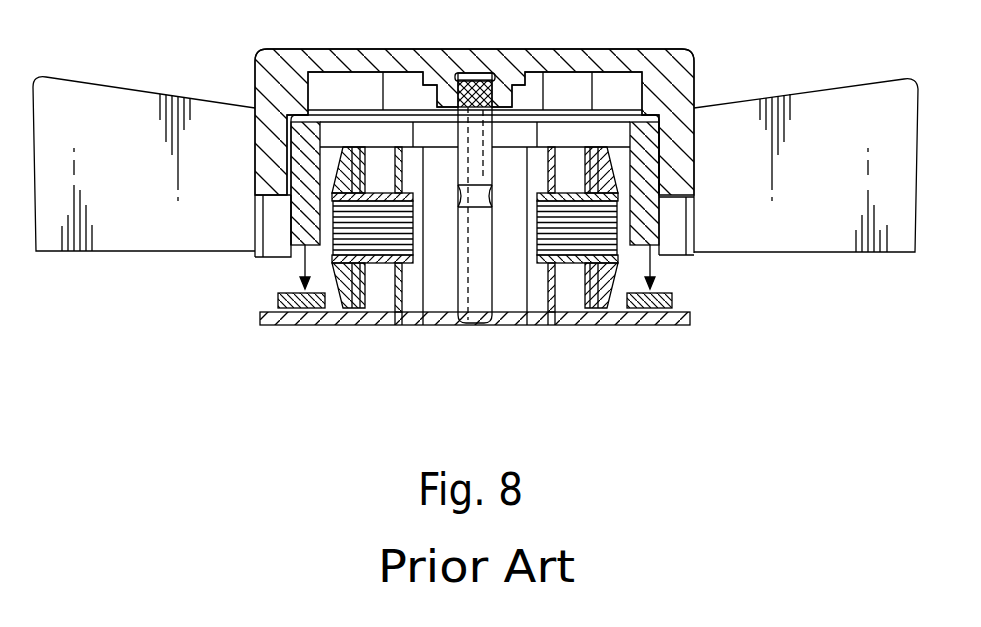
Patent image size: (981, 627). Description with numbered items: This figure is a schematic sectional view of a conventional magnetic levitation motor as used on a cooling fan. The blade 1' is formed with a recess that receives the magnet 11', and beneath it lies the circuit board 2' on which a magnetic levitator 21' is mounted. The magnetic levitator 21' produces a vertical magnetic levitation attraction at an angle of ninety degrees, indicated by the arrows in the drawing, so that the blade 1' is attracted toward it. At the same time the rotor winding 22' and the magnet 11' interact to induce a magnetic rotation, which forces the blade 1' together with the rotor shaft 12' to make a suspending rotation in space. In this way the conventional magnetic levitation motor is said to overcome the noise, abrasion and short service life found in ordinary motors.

The blade 1' is at (475, 140).
The magnet 11' is at (508, 179).
The rotor shaft 12' is at (510, 226).
The circuit board 2' is at (475, 346).
The magnetic levitator 21' is at (473, 315).
The rotor winding 22' is at (474, 202).